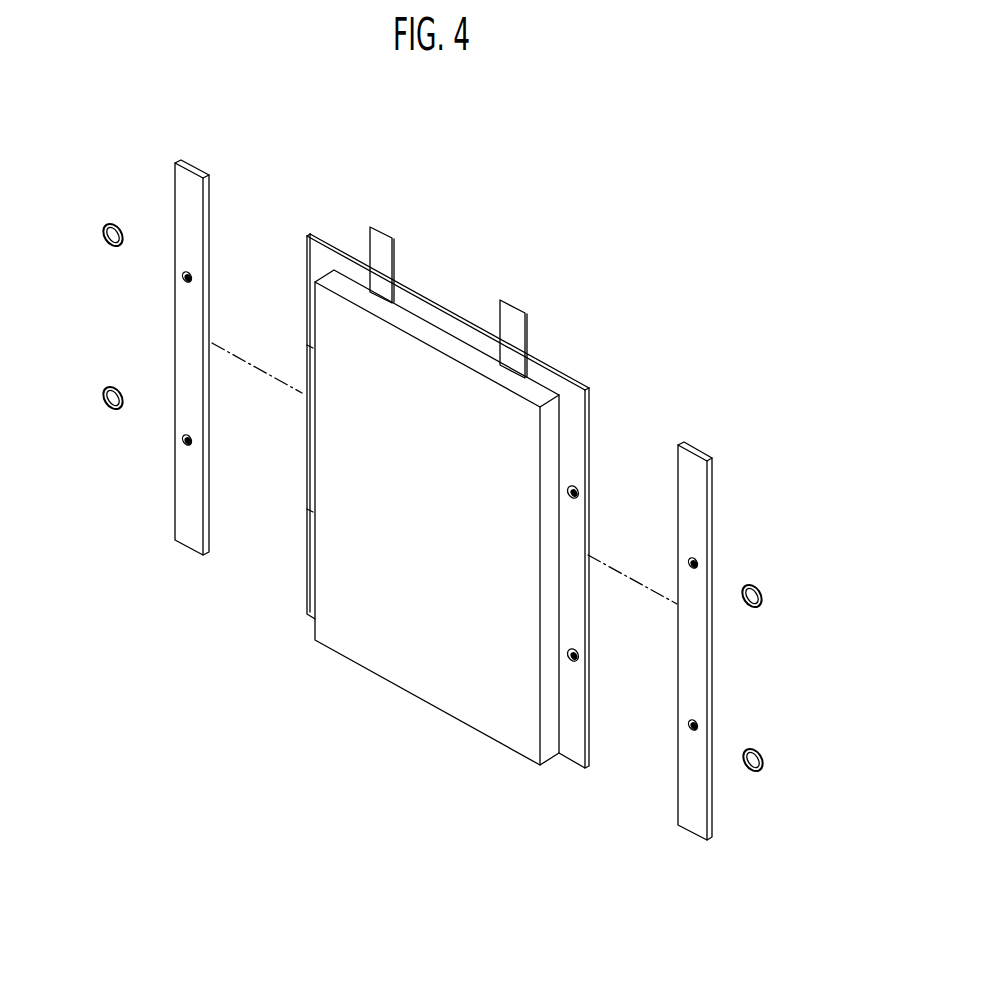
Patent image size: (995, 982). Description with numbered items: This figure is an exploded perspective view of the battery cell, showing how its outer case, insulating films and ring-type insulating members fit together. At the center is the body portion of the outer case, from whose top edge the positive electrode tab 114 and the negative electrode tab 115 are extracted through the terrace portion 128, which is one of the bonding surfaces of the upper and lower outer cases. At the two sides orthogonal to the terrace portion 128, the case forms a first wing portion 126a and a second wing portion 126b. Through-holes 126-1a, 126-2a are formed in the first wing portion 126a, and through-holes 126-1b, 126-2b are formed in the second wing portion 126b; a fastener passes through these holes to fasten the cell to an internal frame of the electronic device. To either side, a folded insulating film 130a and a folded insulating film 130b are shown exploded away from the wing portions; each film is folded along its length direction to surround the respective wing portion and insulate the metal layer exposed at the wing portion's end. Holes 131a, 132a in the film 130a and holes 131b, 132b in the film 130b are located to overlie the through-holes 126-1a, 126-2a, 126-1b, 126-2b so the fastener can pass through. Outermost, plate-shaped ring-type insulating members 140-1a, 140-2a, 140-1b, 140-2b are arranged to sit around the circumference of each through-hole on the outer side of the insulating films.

The positive electrode tab 114 is at (383, 240).
The negative electrode tab 115 is at (513, 308).
The terrace portion 128 is at (539, 377).
The first wing portion 126a is at (572, 458).
The second wing portion 126b is at (308, 266).
The through-hole 126-1a is at (571, 499).
The through-hole 126-2a is at (571, 660).
The through-hole 126-1b is at (312, 347).
The through-hole 126-2b is at (308, 512).
The insulating film 130a is at (698, 650).
The insulating film 130b is at (178, 341).
The hole 131a is at (692, 574).
The hole 132a is at (692, 733).
The hole 131b is at (185, 279).
The hole 132b is at (185, 442).
The plate-shaped ring-type insulating member 140-1a is at (767, 606).
The plate-shaped ring-type insulating member 140-2a is at (768, 771).
The plate-shaped ring-type insulating member 140-1b is at (102, 220).
The plate-shaped ring-type insulating member 140-2b is at (97, 387).